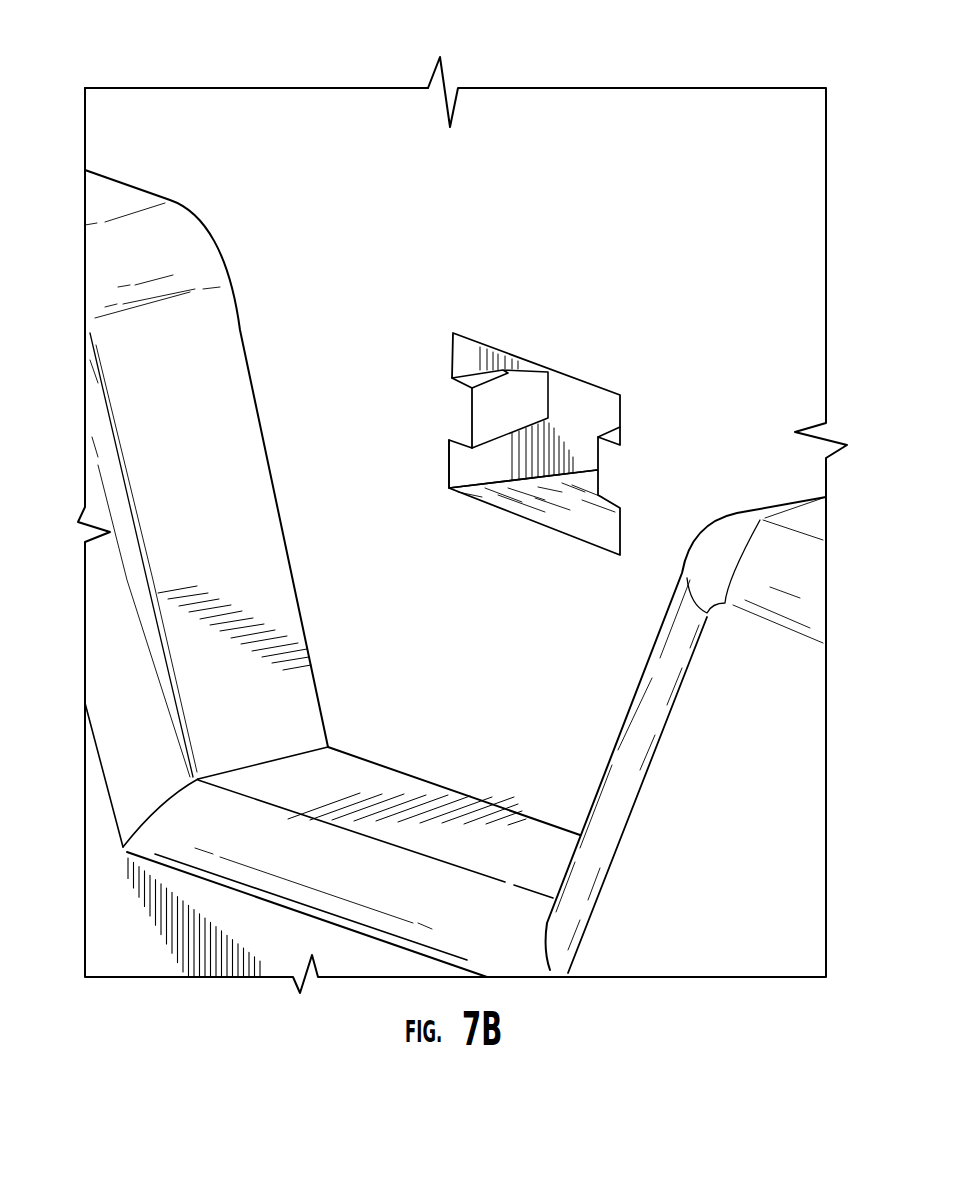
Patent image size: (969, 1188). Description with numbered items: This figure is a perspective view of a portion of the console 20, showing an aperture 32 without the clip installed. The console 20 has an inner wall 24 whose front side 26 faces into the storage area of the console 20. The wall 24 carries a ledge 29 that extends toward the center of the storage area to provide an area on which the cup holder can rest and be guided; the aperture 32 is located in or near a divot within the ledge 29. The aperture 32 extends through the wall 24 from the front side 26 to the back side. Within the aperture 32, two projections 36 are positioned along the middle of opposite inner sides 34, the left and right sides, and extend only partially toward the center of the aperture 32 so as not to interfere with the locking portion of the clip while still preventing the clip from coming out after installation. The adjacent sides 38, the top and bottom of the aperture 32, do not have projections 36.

The console 20 is at (238, 87).
The wall 24 is at (256, 87).
The front side 26 is at (325, 145).
The ledge 29 is at (213, 675).
The aperture 32 is at (455, 373).
The inner side 34 is at (462, 461).
The projection 36 is at (472, 420).
The adjacent side 38 is at (455, 373).